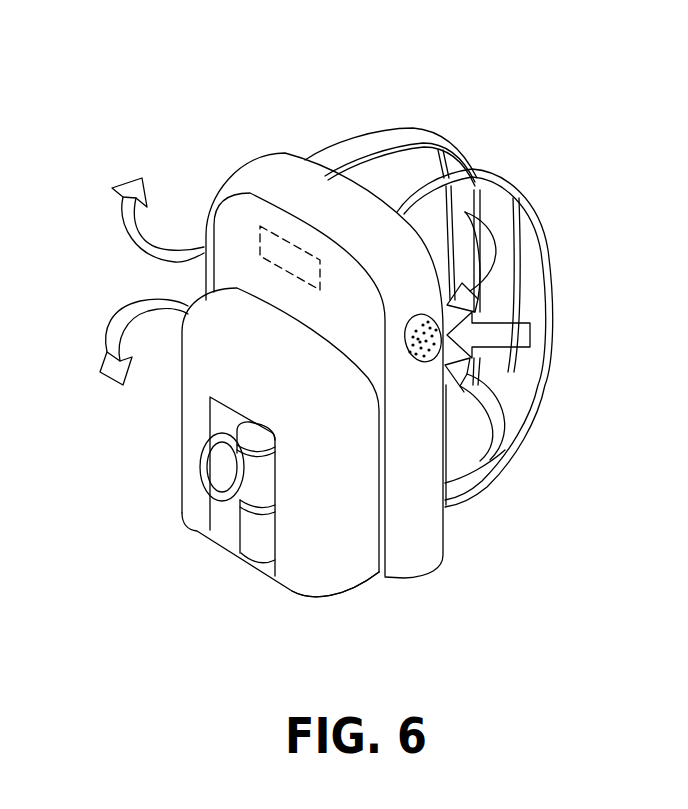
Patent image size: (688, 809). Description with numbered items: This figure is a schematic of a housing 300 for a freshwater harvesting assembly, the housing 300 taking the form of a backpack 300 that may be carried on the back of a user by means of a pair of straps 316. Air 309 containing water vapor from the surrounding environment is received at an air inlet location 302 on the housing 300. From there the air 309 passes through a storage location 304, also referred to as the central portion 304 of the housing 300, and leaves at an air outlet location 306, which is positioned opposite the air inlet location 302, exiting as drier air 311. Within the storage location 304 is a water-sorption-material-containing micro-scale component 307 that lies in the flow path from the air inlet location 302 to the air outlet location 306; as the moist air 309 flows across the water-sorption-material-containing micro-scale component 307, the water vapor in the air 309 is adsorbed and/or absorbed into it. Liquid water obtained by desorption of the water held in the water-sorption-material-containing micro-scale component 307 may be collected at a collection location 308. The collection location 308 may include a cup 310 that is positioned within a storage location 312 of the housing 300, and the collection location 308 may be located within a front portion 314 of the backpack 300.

The housing 300 is at (139, 123).
The air inlet location 302 is at (420, 357).
The storage location 304 is at (254, 158).
The air outlet location 306 is at (201, 245).
The water-sorption-material-containing micro-scale component 307 is at (262, 257).
The collection location 308 is at (245, 443).
The air 309 is at (495, 332).
The cup 310 is at (257, 497).
The drier air 311 is at (107, 352).
The storage location 312 is at (228, 515).
The front portion 314 is at (370, 586).
The straps 316 is at (348, 130).